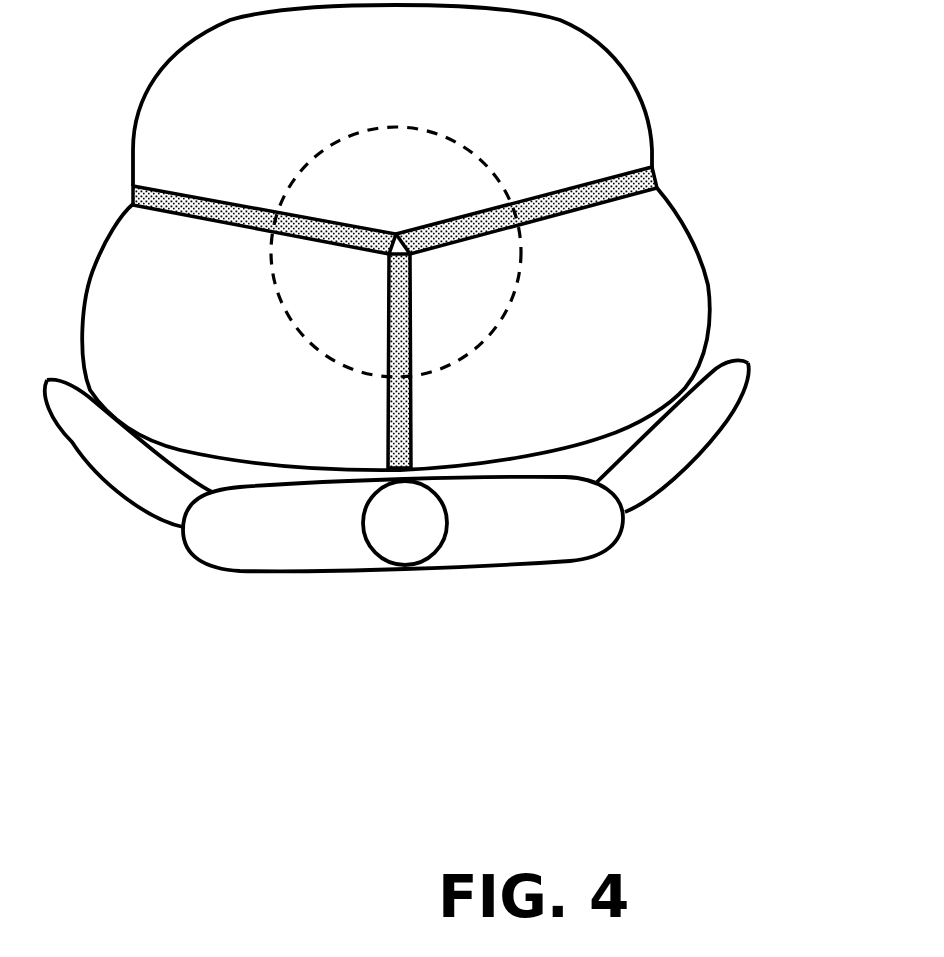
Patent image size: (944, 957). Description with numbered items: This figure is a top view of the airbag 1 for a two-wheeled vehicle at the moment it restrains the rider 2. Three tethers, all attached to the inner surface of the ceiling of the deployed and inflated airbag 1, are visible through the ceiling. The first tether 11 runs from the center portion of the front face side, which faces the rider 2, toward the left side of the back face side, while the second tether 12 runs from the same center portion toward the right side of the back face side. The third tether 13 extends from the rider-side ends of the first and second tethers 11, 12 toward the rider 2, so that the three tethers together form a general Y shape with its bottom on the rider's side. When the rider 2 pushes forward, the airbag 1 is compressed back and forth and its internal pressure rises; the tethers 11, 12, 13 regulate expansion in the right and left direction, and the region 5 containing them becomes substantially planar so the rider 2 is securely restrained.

The airbag 1 is at (698, 229).
The rider 2 is at (578, 560).
The region 5 is at (404, 190).
The first tether 11 is at (260, 228).
The second tether 12 is at (537, 218).
The third tether 13 is at (413, 415).